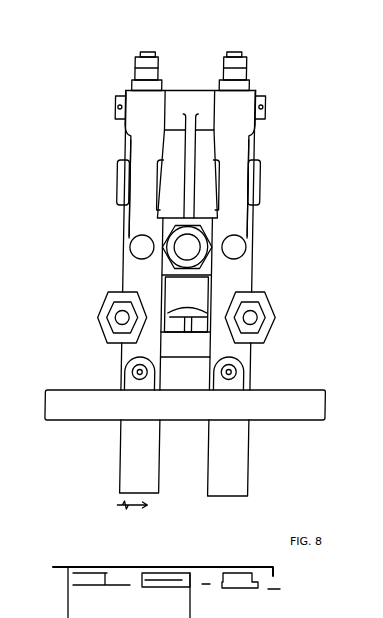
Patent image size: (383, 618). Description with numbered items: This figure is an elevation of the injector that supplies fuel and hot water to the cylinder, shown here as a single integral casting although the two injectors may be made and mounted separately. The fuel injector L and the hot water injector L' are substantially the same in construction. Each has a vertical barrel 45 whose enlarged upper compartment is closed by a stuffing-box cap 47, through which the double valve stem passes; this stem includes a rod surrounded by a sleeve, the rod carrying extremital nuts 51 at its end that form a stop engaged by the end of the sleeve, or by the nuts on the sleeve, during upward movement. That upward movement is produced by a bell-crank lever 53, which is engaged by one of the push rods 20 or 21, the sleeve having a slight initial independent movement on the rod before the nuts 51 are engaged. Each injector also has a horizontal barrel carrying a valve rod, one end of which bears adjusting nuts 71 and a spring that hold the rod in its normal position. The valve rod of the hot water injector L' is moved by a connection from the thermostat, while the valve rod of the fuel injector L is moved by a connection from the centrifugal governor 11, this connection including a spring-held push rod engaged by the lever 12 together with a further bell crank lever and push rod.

The centrifugal governor 11 is at (142, 526).
The lever 12 is at (297, 318).
The push rod 20 is at (234, 245).
The push rod 21 is at (137, 245).
The vertical barrel 45 is at (126, 277).
The stuffing-box cap 47 is at (118, 178).
The extremital nuts 51 is at (236, 67).
The bell-crank lever 53 is at (239, 153).
The adjusting nuts 71 is at (255, 328).
The fuel injector L is at (93, 348).
The hot water injector L' is at (267, 353).